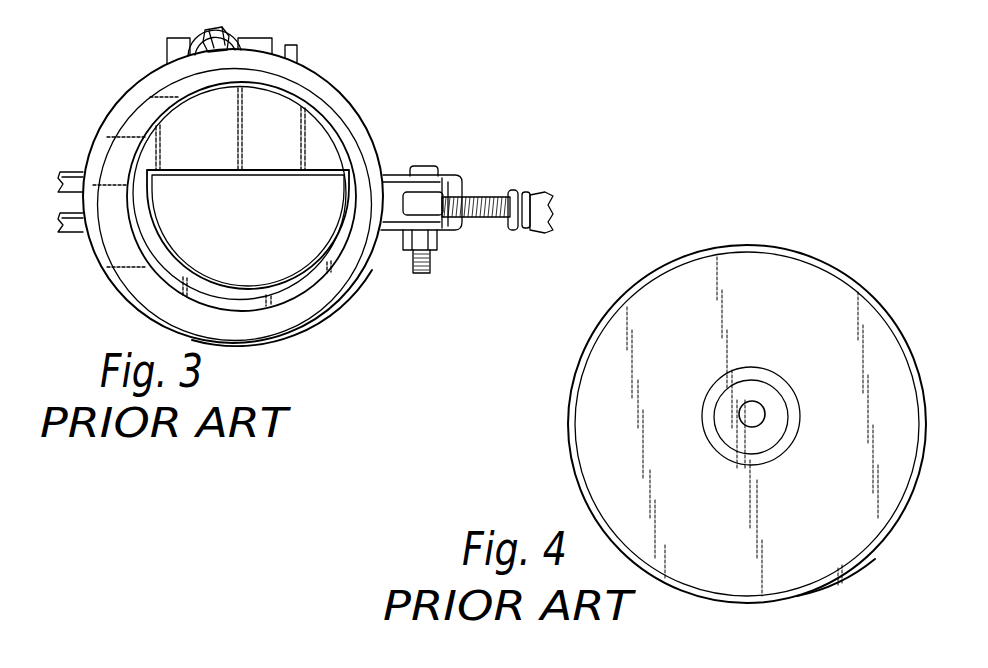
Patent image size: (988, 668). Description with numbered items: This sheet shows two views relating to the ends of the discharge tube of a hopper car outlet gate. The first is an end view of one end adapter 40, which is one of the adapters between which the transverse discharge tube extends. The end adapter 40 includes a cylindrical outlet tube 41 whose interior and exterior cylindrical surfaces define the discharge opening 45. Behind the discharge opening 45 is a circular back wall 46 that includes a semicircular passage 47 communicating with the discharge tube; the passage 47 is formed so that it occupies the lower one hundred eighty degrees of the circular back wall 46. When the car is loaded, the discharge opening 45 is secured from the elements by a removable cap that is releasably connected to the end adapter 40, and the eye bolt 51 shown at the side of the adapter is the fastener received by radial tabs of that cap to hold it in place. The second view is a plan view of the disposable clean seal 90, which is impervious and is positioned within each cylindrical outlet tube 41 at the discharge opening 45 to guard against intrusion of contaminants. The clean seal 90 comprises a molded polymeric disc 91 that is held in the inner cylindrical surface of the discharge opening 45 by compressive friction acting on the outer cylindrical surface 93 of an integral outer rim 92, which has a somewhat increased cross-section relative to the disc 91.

In FIG. 3, the end adapter 40 is at (352, 90).
In FIG. 3, the cylindrical outlet tube 41 is at (300, 79).
In FIG. 3, the discharge opening 45 is at (117, 231).
In FIG. 3, the circular back wall 46 is at (322, 134).
In FIG. 3, the semicircular passage 47 is at (305, 192).
In FIG. 3, the eye bolt 51 is at (536, 190).
In FIG. 4, the clean seal 90 is at (877, 282).
In FIG. 4, the molded polymeric disc 91 is at (875, 338).
In FIG. 4, the outer rim 92 is at (906, 527).
In FIG. 4, the outer cylindrical surface 93 is at (865, 566).